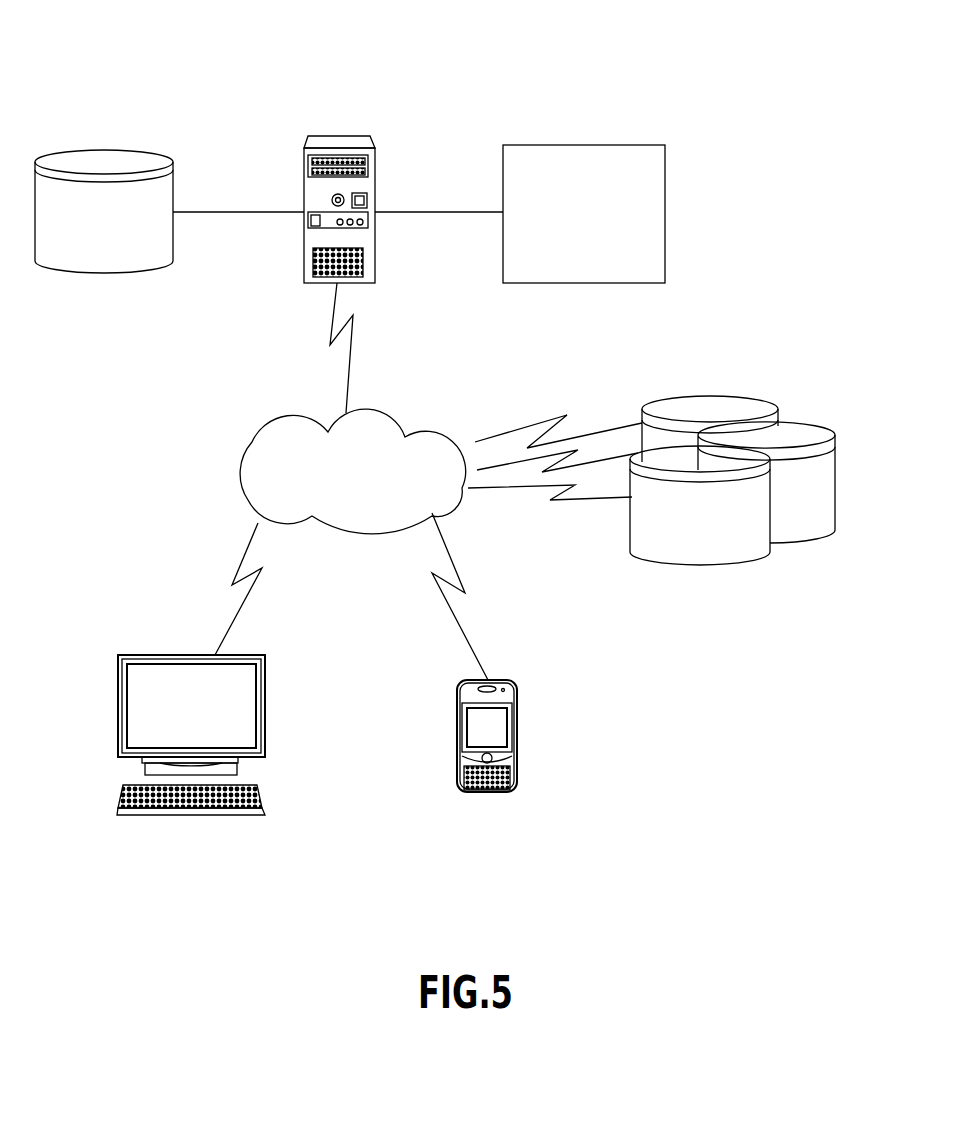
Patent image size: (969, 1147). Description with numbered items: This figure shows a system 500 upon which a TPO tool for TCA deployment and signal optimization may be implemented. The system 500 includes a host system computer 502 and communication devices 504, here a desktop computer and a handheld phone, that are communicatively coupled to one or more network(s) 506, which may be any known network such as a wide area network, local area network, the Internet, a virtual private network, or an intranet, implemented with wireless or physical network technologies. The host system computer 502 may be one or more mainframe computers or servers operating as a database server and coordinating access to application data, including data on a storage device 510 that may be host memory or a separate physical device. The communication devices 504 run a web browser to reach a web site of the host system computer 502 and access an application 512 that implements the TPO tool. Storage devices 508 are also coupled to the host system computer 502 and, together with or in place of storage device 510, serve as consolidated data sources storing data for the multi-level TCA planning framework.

The system 500 is at (476, 74).
The host system computer 502 is at (337, 136).
The communication devices 504 is at (528, 830).
The network(s) 506 is at (385, 410).
The storage devices 508 is at (847, 403).
The storage device 510 is at (100, 147).
The application 512 is at (562, 145).